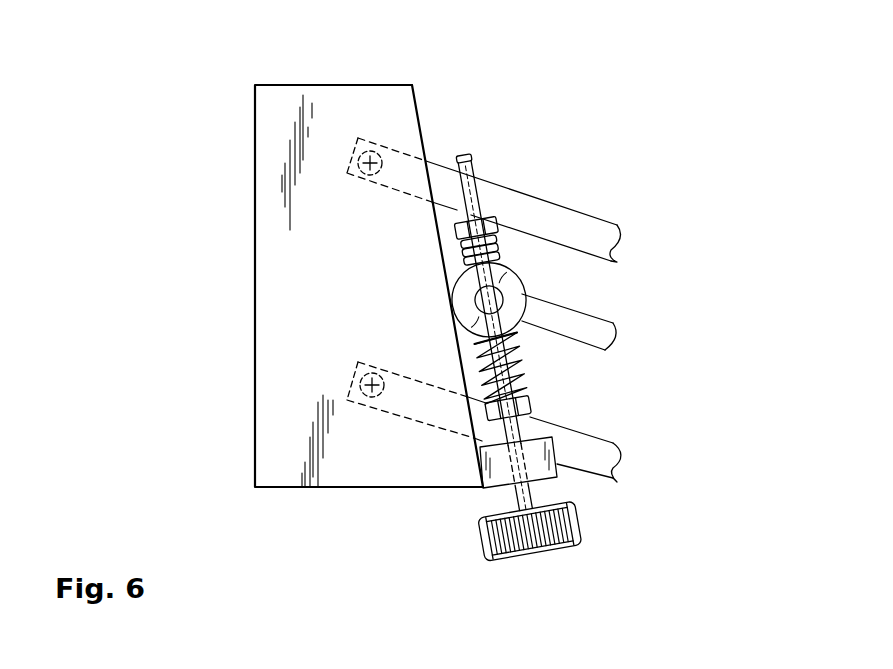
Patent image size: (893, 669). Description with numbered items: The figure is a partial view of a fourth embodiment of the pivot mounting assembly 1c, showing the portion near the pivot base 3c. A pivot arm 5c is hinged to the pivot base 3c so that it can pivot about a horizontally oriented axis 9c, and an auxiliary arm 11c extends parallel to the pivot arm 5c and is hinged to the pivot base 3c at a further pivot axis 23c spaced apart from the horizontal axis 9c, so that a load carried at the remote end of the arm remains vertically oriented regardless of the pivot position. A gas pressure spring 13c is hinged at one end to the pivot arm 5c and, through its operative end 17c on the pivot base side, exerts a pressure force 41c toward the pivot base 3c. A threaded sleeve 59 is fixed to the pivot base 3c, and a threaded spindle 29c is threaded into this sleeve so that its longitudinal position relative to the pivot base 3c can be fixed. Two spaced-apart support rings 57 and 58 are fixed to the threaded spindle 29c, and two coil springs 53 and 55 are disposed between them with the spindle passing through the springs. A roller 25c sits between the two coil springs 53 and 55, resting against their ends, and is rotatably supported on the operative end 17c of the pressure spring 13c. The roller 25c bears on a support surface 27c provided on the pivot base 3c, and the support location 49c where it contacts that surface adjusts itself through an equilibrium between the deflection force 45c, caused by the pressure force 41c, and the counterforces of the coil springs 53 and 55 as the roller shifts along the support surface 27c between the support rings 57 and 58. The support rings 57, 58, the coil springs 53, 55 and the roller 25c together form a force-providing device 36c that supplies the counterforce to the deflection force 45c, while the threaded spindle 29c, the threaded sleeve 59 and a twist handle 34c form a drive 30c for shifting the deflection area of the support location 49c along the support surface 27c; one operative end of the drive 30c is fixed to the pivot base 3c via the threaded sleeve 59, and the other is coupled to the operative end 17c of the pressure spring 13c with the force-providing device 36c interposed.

The pivot mounting assembly 1c is at (481, 325).
The pivot base 3c is at (284, 85).
The pivot arm 5c is at (593, 216).
The horizontal axis 9c is at (368, 165).
The auxiliary arm 11c is at (622, 460).
The pressure spring 13c is at (616, 342).
The operative end of the pressure spring 17c is at (611, 346).
The further pivot axis 23c is at (366, 383).
The roller 25c is at (462, 325).
The support surface 27c is at (430, 122).
The threaded spindle 29c is at (472, 156).
The drive 30c is at (690, 519).
The twist handle 34c is at (530, 560).
The force-providing device 36c is at (697, 351).
The pressure force 41c is at (550, 319).
The deflection force 45c is at (430, 292).
The support location 49c is at (443, 317).
The coil spring 53 is at (498, 240).
The coil spring 55 is at (525, 355).
The support ring 57 is at (482, 415).
The support ring 58 is at (497, 220).
The threaded sleeve 59 is at (556, 472).